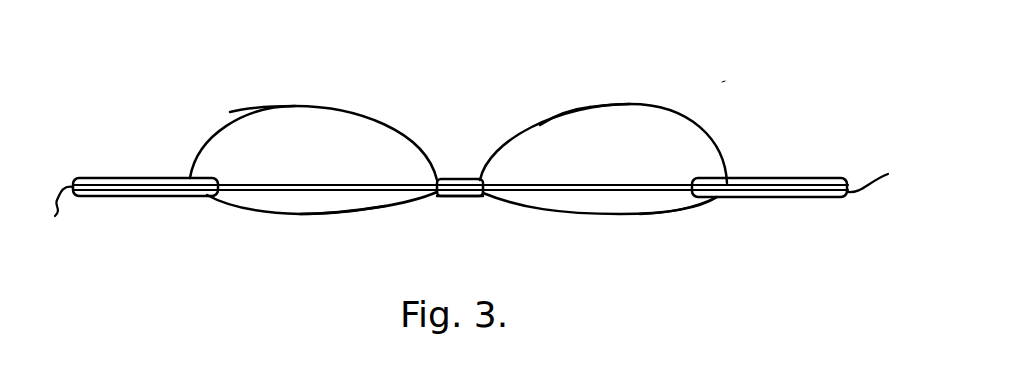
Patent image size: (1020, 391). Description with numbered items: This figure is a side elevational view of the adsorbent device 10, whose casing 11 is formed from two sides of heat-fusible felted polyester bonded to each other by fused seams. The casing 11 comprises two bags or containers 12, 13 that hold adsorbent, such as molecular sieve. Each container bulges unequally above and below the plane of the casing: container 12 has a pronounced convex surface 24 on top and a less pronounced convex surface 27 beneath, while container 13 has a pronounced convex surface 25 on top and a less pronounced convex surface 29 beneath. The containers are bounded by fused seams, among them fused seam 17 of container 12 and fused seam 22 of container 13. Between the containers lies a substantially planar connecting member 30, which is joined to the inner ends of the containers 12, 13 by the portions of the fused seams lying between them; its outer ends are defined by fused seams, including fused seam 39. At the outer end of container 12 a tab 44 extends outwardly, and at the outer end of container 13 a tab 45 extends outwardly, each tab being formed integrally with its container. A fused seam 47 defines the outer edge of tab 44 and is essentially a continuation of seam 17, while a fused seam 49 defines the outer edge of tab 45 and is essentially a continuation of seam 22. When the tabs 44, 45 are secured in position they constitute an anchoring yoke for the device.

The double-chambered device assembly 10 is at (722, 82).
The casing 11 is at (665, 107).
The container 12 is at (612, 107).
The container 13 is at (323, 118).
The fused seam 17 is at (599, 193).
The fused seam 22 is at (327, 192).
The pronounced convex surface 24 is at (575, 108).
The pronounced convex surface 25 is at (270, 107).
The less pronounced convex surface 27 is at (660, 213).
The less pronounced convex surface 29 is at (285, 215).
The connecting member 30 is at (455, 178).
The fused seam 39 is at (452, 196).
The tab 44 is at (815, 178).
The tab 45 is at (108, 178).
The fused seam 47 is at (897, 166).
The fused seam 49 is at (58, 217).